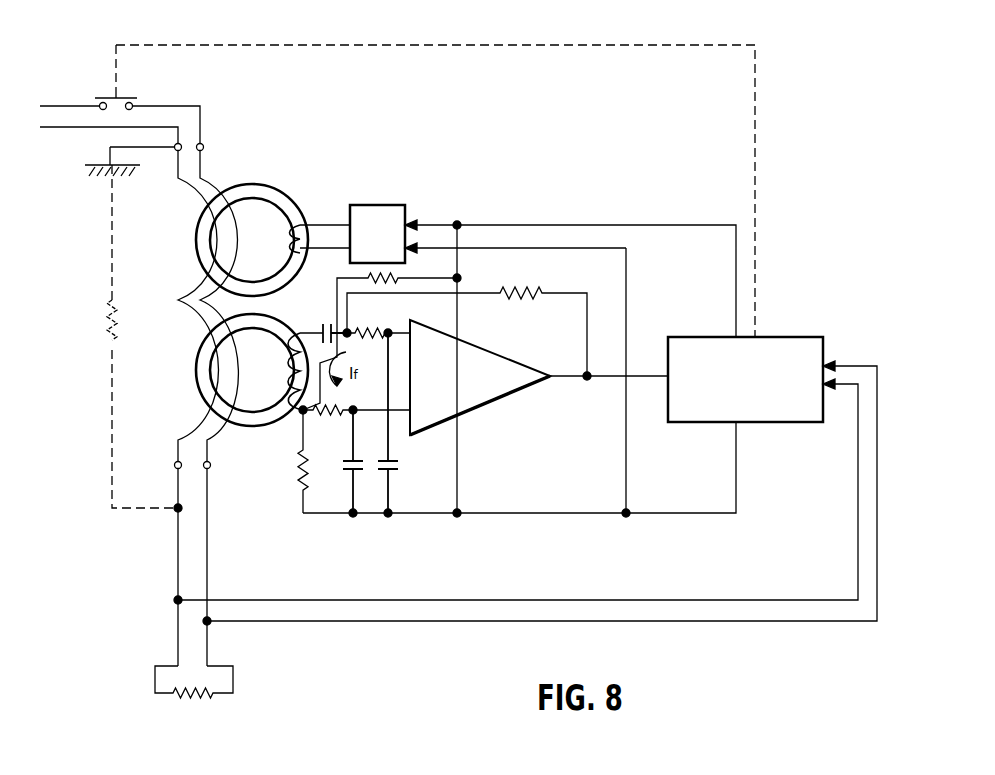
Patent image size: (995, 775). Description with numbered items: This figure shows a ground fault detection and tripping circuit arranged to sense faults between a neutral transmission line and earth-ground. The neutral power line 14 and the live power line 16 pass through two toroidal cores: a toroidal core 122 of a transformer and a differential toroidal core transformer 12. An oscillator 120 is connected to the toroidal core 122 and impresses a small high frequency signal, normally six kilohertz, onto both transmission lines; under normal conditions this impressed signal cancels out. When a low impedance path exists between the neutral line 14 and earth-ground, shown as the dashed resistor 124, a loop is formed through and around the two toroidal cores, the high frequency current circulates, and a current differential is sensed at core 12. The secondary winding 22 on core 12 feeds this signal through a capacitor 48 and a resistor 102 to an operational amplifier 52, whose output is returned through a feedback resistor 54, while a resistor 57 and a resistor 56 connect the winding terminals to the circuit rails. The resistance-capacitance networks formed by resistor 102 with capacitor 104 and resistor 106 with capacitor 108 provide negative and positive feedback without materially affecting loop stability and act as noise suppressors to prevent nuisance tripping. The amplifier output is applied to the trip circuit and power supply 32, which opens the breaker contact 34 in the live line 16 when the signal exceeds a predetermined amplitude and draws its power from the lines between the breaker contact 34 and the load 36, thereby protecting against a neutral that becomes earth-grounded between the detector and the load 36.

The breaker contact 34 is at (131, 97).
The live power line 16 is at (203, 122).
The neutral power line 14 is at (175, 152).
The dashed resistor 124 is at (104, 337).
The toroidal core 122 is at (266, 187).
The differential toroidal core transformer 12 is at (262, 426).
The secondary winding 22 is at (296, 375).
The capacitor 48 is at (324, 323).
The resistor 102 is at (365, 330).
The feedback resistor 54 is at (528, 290).
The resistor 57 is at (402, 280).
The operational amplifier 52 is at (483, 392).
The resistor 106 is at (322, 415).
The resistor 56 is at (300, 474).
The capacitor 108 is at (340, 463).
The capacitor 104 is at (392, 470).
The oscillator 120 is at (383, 205).
The trip circuit and power supply 32 is at (792, 337).
The load 36 is at (190, 697).